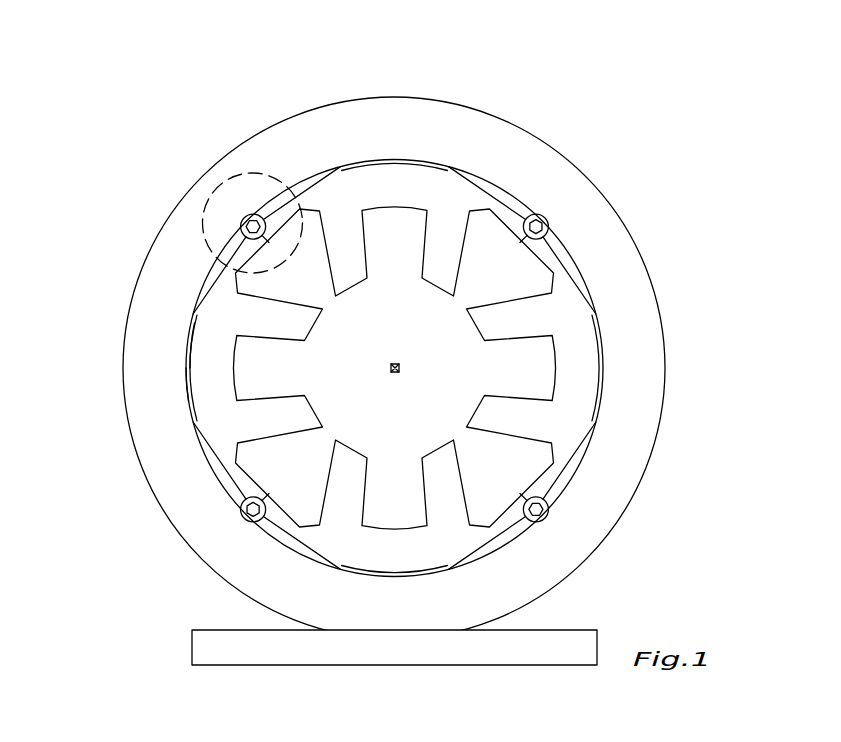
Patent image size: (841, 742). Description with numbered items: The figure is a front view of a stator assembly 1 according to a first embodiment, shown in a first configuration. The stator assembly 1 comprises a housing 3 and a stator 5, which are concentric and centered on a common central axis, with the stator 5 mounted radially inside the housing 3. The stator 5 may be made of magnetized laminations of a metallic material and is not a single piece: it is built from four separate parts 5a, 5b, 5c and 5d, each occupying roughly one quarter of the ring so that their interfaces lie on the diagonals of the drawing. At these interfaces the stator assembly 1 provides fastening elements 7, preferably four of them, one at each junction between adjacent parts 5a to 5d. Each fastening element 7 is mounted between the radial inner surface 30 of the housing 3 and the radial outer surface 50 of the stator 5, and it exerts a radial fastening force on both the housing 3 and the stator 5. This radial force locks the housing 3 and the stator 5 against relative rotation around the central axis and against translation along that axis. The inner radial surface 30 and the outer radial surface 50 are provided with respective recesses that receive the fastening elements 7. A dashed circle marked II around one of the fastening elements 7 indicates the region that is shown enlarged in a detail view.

The stator assembly 1 is at (567, 112).
The housing 3 is at (605, 258).
The stator 5 is at (409, 175).
The separate part 5a is at (373, 177).
The separate part 5b is at (580, 391).
The separate part 5c is at (392, 556).
The separate part 5d is at (217, 416).
The fastening element 7 is at (250, 212).
The radial inner surface 30 is at (197, 321).
The radial outer surface 50 is at (182, 384).
The detail view II is at (211, 183).